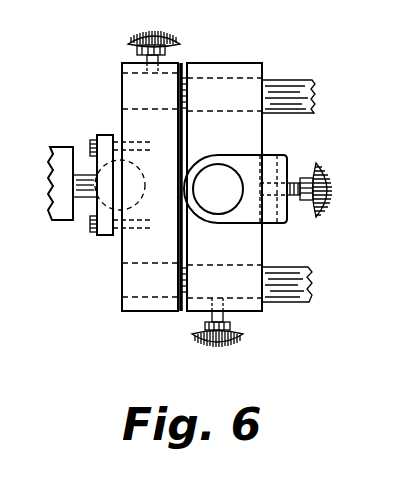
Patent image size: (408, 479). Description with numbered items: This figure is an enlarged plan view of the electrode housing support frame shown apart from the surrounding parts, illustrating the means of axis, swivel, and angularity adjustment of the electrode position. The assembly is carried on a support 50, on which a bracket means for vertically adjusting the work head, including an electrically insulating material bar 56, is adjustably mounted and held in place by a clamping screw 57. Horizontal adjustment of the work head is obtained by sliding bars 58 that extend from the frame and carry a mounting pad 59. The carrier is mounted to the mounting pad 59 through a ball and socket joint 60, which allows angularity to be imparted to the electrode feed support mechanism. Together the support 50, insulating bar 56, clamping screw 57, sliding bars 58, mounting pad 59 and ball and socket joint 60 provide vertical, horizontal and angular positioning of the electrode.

The support 50 is at (276, 205).
The electrically insulating material bar 56 is at (221, 206).
The clamping screw 57 is at (344, 176).
The sliding bars 58 is at (310, 186).
The mounting pad 59 is at (114, 204).
The ball and socket joint 60 is at (98, 162).